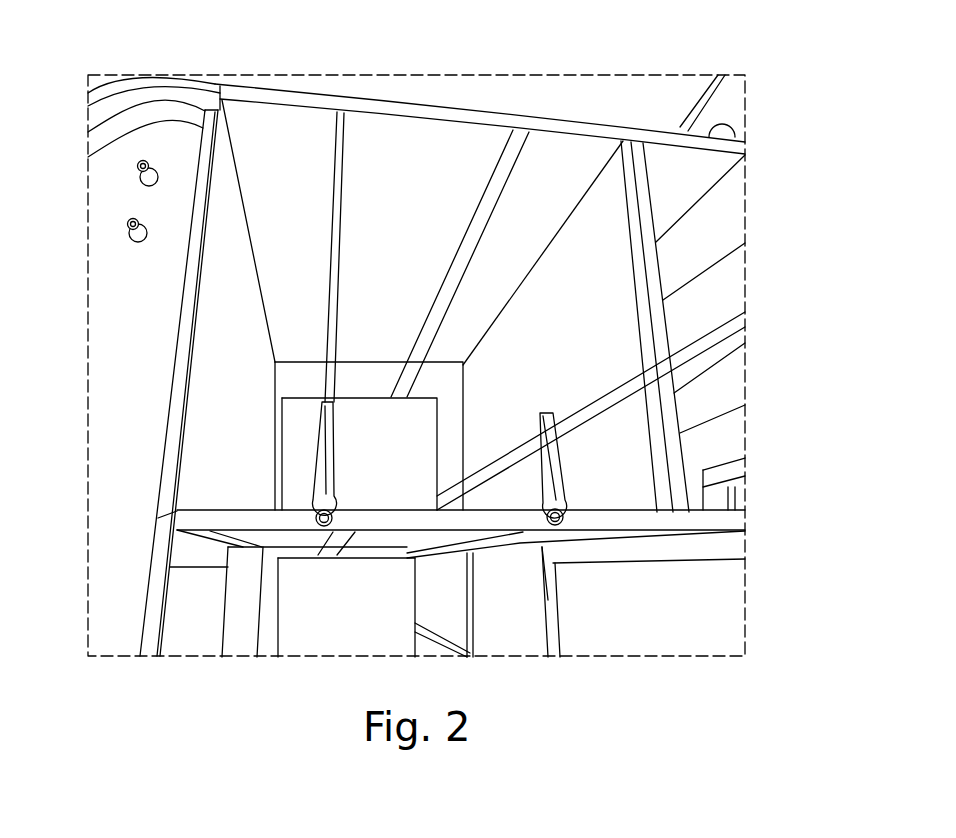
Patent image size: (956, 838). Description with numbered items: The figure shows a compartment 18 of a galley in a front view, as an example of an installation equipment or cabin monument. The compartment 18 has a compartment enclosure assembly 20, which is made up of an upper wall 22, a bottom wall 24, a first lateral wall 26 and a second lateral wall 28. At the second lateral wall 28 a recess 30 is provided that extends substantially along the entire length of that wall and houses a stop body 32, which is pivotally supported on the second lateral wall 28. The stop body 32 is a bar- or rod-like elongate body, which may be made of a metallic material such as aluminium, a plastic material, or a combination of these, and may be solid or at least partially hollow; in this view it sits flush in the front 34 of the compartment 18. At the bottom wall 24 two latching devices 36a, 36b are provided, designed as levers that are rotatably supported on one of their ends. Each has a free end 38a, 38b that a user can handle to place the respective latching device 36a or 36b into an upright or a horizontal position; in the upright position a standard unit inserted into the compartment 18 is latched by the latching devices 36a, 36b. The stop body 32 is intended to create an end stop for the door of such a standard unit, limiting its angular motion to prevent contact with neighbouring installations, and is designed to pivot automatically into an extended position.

The compartment 18 is at (572, 108).
The compartment enclosure assembly 20 is at (647, 261).
The upper wall 22 is at (468, 104).
The bottom wall 24 is at (424, 498).
The first lateral wall 26 is at (673, 280).
The second lateral wall 28 is at (231, 269).
The recess 30 is at (209, 101).
The stop body 32 is at (190, 280).
The front 34 is at (393, 70).
The latching device 36a is at (325, 492).
The latching device 36b is at (553, 490).
The free end 38a is at (331, 402).
The free end 38b is at (554, 412).